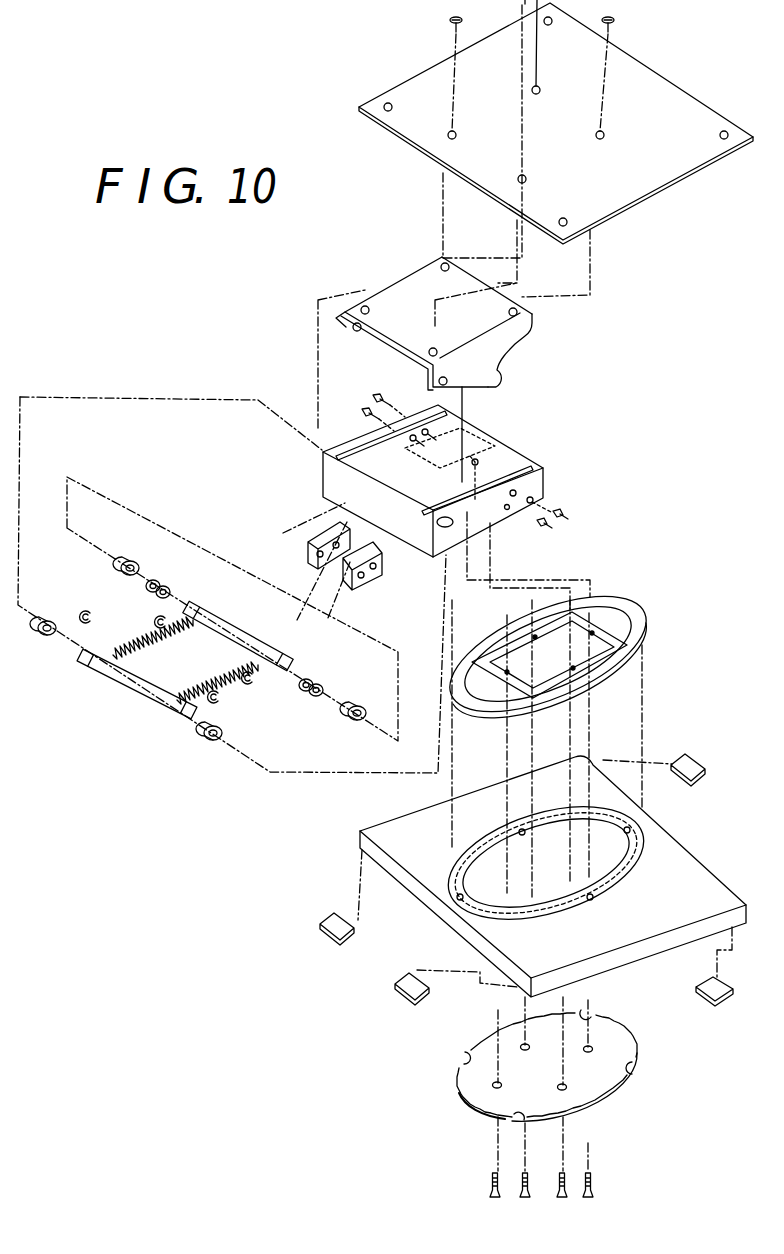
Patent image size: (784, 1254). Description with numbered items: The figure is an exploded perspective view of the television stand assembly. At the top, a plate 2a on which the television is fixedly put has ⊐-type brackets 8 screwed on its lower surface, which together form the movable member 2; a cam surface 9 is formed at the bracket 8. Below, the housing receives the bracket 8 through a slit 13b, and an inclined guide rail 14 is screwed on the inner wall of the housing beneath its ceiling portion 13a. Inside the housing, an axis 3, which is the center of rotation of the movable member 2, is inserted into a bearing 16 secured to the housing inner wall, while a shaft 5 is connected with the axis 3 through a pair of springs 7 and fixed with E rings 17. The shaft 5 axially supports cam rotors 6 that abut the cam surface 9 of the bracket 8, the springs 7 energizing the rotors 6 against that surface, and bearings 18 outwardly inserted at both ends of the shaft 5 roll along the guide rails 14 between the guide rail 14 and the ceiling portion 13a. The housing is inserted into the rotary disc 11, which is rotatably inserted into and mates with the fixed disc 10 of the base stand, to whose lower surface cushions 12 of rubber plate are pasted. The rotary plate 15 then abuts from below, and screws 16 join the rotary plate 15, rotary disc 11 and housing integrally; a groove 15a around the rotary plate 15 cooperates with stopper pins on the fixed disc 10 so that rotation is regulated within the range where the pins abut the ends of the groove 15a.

The movable member 2 is at (623, 267).
The plate 2a is at (656, 83).
The axis 3 is at (140, 688).
The shaft 5 is at (237, 638).
The rotor 6 is at (165, 588).
The spring 7 is at (160, 644).
The bracket 8 is at (418, 272).
The cam surface 9 is at (508, 350).
The fixed disc 10 is at (676, 851).
The rotary disc 11 is at (642, 612).
The cushion 12 is at (335, 937).
The ceiling portion of the housing 13a is at (498, 451).
The slit of the housing 13b is at (546, 464).
The guide rail 14 is at (306, 556).
The rotary plate 15 is at (462, 1090).
The groove 15a is at (487, 1118).
The bearing / screws 16 is at (40, 641).
The E ring 17 is at (85, 609).
The bearing 18 is at (125, 559).